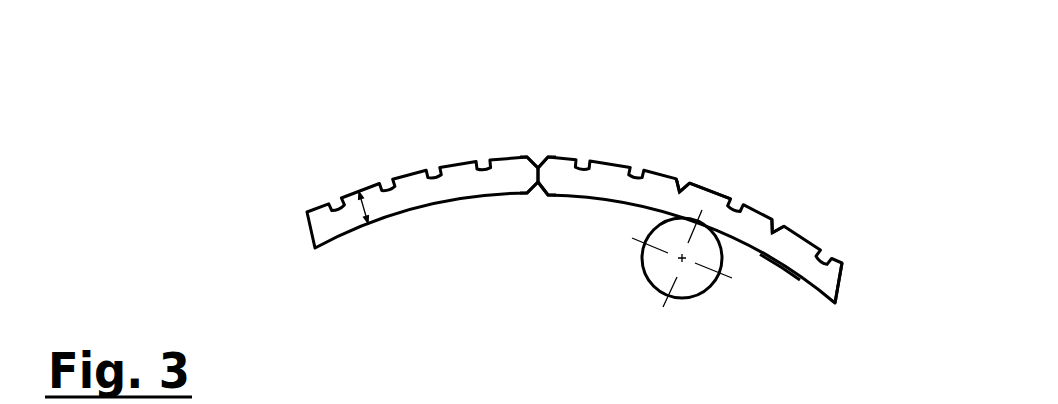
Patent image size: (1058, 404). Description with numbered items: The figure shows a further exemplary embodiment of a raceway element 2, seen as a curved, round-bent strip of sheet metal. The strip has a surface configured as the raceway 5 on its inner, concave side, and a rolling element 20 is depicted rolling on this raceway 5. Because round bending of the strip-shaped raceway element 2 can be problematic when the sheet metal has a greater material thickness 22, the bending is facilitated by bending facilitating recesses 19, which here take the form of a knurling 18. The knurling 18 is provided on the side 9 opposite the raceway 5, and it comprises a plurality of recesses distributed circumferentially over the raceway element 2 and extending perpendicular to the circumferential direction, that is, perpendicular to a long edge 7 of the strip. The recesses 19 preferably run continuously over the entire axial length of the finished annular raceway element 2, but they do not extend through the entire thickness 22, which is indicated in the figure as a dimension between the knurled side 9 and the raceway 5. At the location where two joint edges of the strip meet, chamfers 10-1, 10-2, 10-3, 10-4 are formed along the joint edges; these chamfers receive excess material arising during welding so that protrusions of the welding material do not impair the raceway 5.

The raceway element 2 is at (858, 154).
The raceway 5 is at (778, 264).
The long edge 7 is at (828, 283).
The side opposite the raceway 9 is at (296, 170).
The chamfer 10-1 is at (522, 143).
The chamfer 10-2 is at (556, 140).
The chamfer 10-3 is at (545, 210).
The chamfer 10-4 is at (524, 210).
The knurling 18 is at (790, 176).
The bending facilitating recess 19 is at (685, 189).
The rolling element 20 is at (683, 298).
The thickness 22 is at (363, 208).